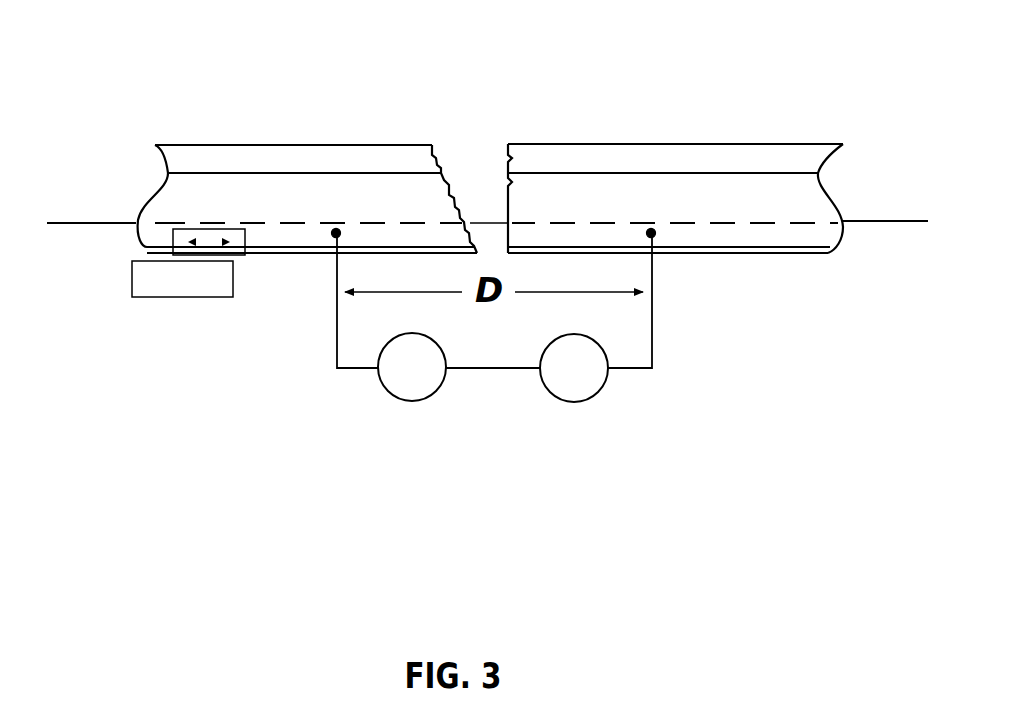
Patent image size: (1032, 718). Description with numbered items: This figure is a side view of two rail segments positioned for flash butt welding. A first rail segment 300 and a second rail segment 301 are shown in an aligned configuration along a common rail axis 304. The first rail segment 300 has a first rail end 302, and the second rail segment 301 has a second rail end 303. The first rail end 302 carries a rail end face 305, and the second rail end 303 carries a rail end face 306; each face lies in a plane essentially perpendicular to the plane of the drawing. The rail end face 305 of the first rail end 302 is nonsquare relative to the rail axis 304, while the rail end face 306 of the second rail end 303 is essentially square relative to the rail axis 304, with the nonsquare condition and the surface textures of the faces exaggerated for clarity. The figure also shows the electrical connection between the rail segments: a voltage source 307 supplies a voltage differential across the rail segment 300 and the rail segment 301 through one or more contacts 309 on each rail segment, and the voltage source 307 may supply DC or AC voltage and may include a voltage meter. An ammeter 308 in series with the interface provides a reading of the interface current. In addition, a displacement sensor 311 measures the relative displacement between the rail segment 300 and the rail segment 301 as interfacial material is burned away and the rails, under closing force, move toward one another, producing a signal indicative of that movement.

The first rail segment 300 is at (242, 162).
The second rail segment 301 is at (725, 162).
The first rail end 302 is at (418, 155).
The second rail end 303 is at (527, 153).
The rail axis 304 is at (112, 221).
The rail end face 305 is at (455, 162).
The rail end face 306 is at (495, 162).
The voltage source 307 is at (393, 390).
The ammeter 308 is at (590, 402).
The contacts 309 is at (334, 236).
The displacement sensor 311 is at (188, 263).